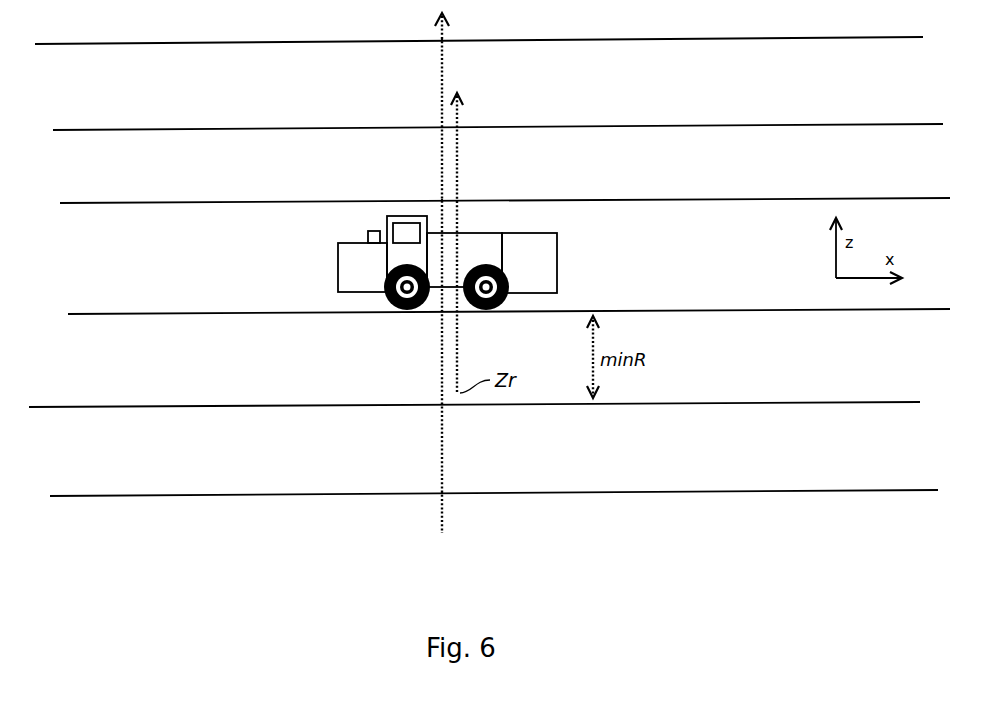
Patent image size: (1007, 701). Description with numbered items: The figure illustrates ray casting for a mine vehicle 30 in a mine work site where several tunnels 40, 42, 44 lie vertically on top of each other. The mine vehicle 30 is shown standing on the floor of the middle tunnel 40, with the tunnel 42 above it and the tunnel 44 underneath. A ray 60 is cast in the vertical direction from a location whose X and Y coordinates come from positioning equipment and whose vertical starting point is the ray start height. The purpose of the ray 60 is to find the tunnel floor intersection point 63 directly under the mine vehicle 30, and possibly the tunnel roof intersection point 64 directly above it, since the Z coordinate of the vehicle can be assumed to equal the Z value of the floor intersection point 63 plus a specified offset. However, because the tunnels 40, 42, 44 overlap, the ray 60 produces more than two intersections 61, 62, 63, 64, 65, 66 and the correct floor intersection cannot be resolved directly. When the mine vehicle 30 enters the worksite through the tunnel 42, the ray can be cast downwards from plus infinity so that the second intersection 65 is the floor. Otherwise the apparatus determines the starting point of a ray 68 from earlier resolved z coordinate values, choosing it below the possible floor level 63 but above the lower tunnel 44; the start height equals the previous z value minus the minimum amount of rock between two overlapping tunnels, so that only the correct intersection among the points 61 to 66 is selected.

The mine vehicle 30 is at (316, 269).
The tunnel 40 is at (505, 256).
The tunnel 42 is at (489, 83).
The tunnel 44 is at (483, 449).
The ray 60 is at (444, 520).
The intersection 61 is at (440, 490).
The intersection 62 is at (440, 402).
The floor intersection point 63 is at (438, 312).
The roof intersection point 64 is at (440, 198).
The second intersection 65 is at (440, 125).
The intersection 66 is at (440, 33).
The ray 68 is at (460, 367).